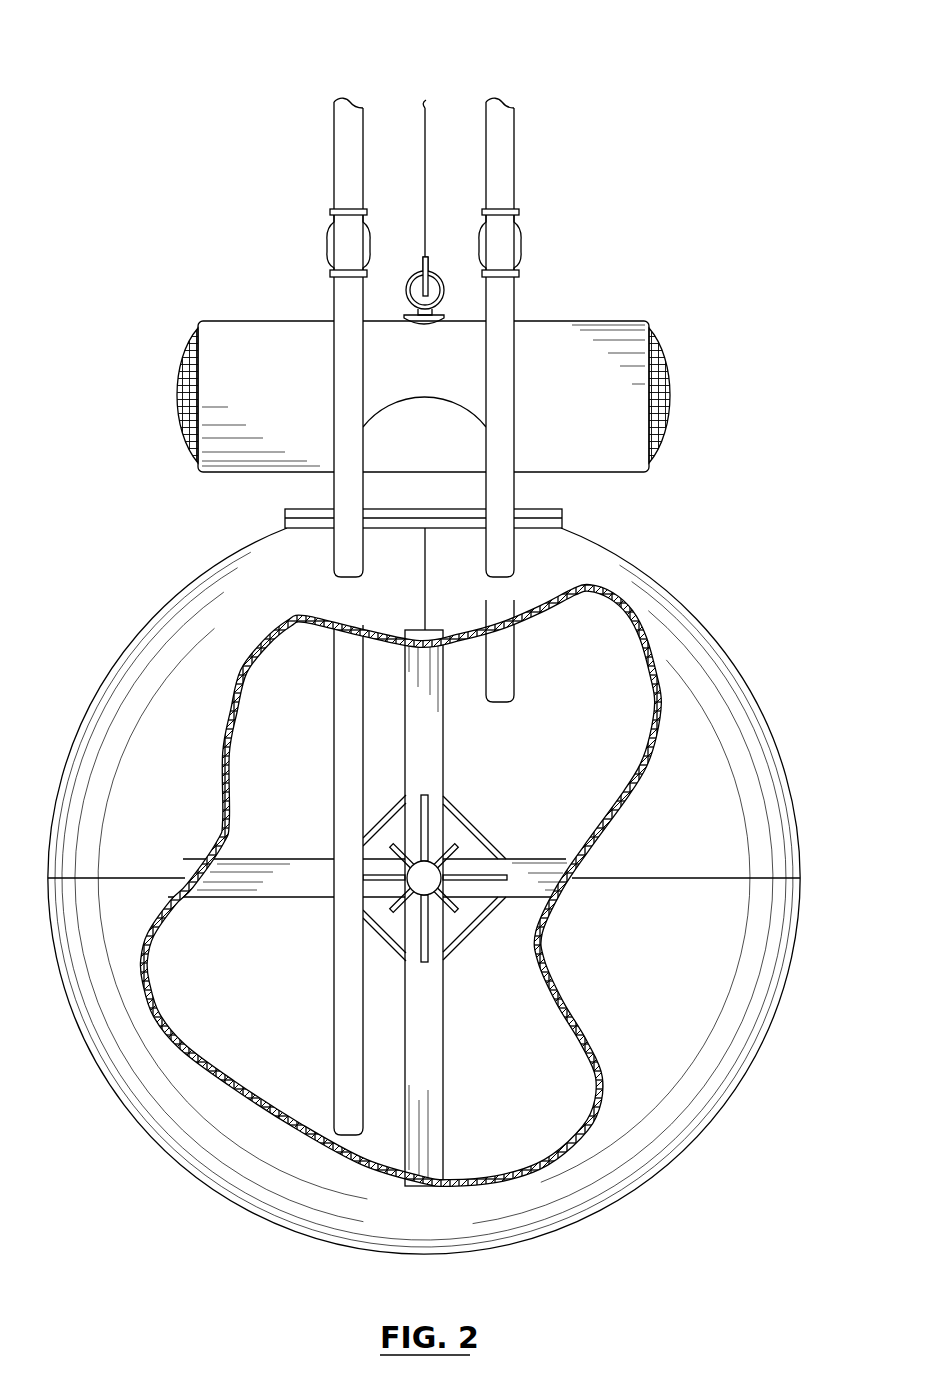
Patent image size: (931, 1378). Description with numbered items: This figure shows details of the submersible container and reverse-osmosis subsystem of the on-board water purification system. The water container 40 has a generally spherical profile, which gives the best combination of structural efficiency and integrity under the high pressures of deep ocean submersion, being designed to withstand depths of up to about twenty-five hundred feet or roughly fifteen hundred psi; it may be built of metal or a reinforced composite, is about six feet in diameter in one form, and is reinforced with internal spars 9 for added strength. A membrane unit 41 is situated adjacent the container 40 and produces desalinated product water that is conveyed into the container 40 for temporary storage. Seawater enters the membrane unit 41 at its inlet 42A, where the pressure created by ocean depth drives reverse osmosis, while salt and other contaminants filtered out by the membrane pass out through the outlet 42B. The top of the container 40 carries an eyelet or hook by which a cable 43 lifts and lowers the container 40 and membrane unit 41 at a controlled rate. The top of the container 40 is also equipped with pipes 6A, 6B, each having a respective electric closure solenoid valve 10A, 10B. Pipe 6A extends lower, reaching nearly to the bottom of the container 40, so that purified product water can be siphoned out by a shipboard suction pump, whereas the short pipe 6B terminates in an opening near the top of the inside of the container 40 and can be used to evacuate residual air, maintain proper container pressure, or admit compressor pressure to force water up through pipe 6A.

The pipe 6A is at (365, 128).
The pipe 6B is at (515, 128).
The cable 43 is at (423, 132).
The electric closure solenoid valve 10A is at (333, 225).
The electric closure solenoid valve 10B is at (518, 230).
The membrane unit 41 is at (291, 319).
The inlet 42A is at (185, 358).
The outlet 42B is at (666, 370).
The water container 40 is at (629, 563).
The internal spars 9 is at (443, 1120).